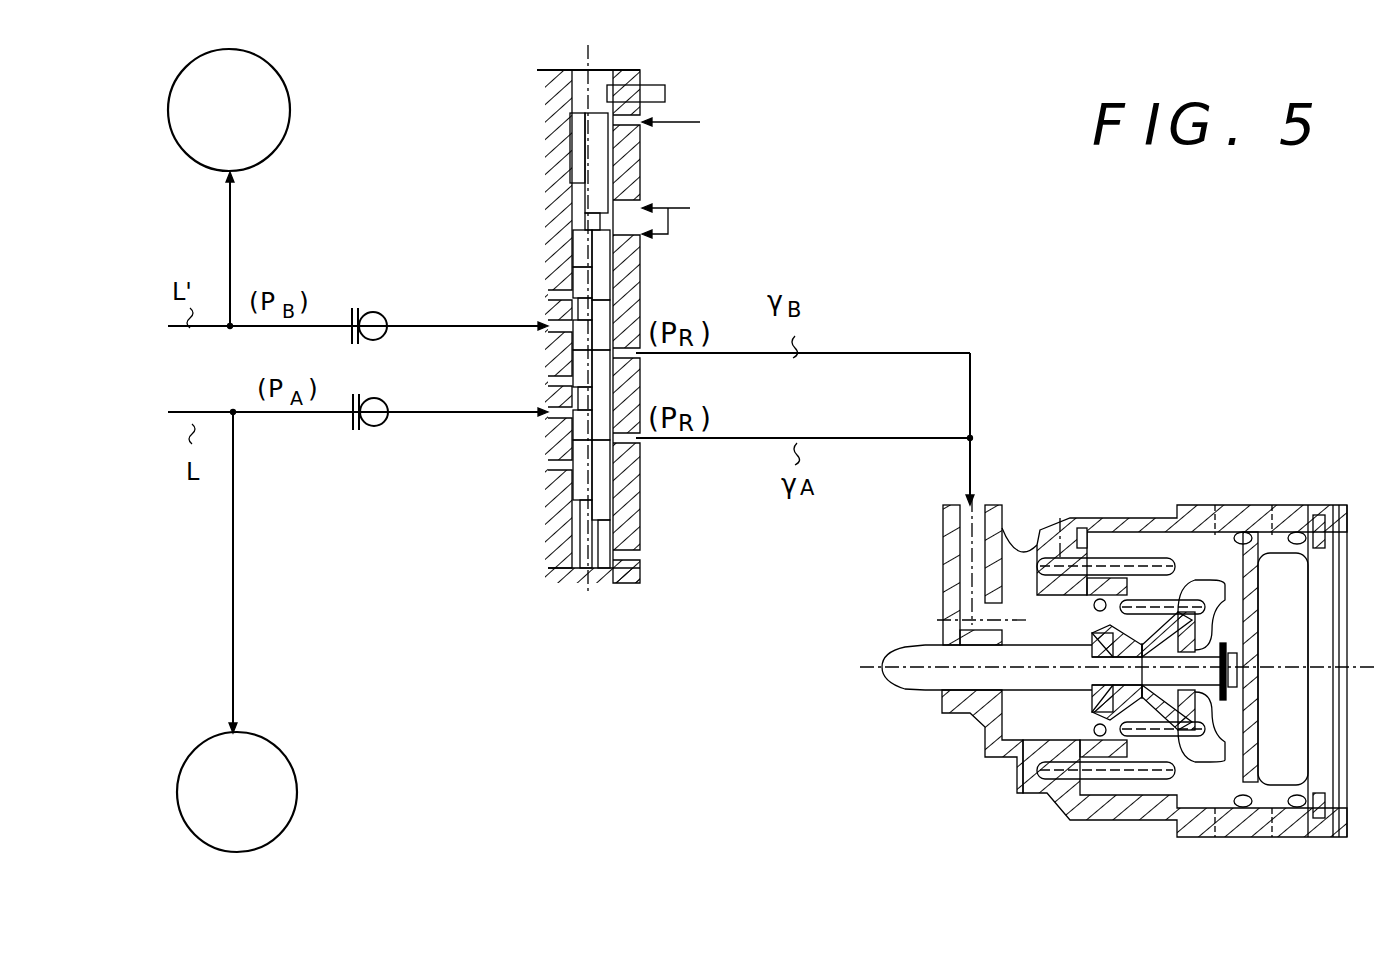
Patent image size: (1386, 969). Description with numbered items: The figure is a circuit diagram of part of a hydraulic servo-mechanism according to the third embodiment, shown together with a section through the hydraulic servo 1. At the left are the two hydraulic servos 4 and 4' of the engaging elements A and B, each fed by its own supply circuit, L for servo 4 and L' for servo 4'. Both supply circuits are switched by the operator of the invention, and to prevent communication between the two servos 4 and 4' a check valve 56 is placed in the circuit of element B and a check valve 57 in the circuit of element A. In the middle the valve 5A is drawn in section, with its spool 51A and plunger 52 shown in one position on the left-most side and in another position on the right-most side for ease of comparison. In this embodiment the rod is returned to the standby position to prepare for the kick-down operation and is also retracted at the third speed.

The pump 1 is at (1139, 510).
The hydraulic servo 4 is at (261, 792).
The hydraulic servo 4' is at (257, 110).
The valve 5A is at (648, 60).
The spool 51A is at (620, 492).
The spool element 52 is at (565, 150).
The check valve 56 is at (381, 314).
The check valve 57 is at (382, 400).